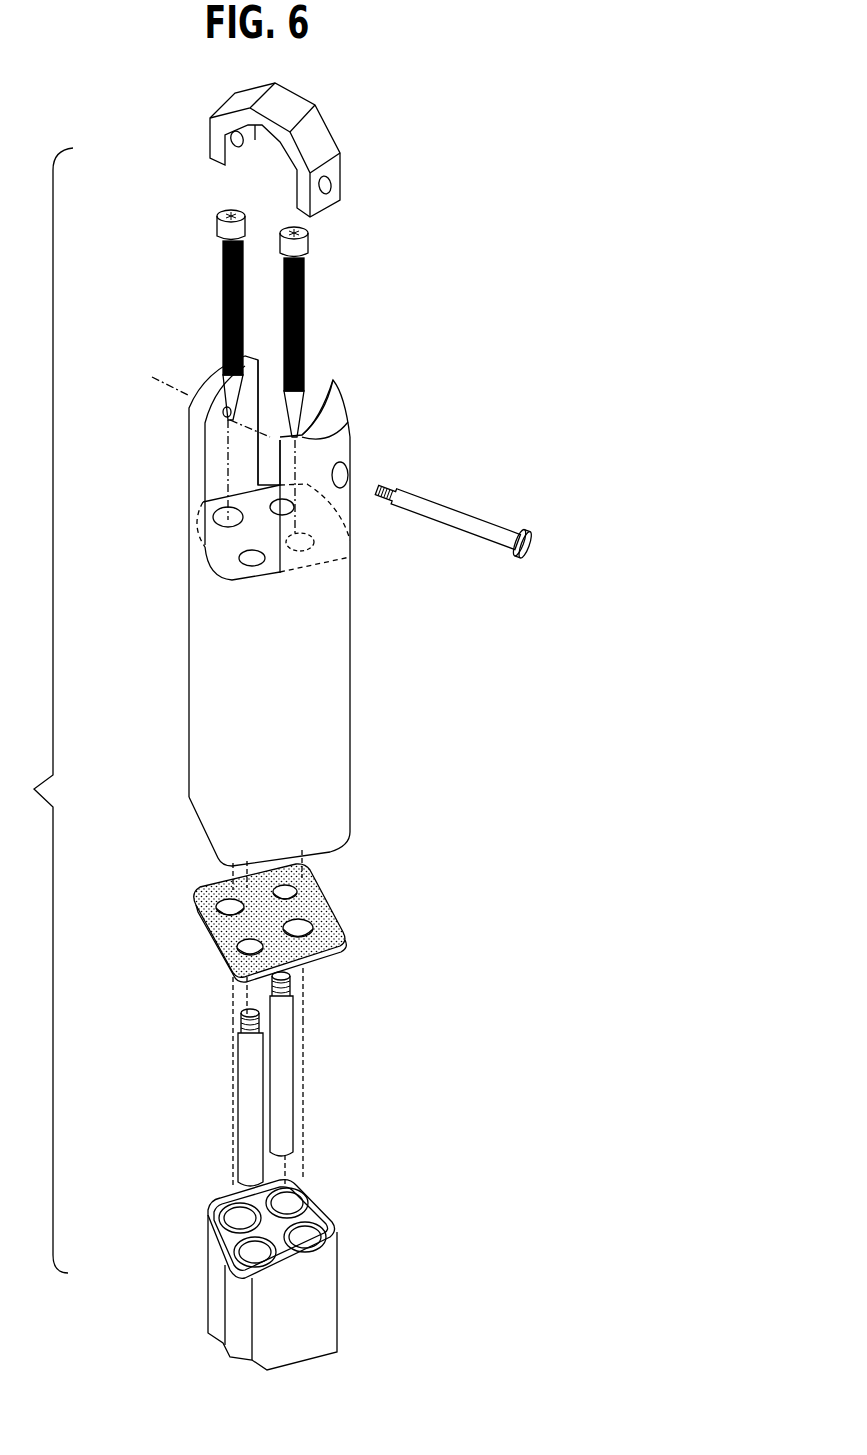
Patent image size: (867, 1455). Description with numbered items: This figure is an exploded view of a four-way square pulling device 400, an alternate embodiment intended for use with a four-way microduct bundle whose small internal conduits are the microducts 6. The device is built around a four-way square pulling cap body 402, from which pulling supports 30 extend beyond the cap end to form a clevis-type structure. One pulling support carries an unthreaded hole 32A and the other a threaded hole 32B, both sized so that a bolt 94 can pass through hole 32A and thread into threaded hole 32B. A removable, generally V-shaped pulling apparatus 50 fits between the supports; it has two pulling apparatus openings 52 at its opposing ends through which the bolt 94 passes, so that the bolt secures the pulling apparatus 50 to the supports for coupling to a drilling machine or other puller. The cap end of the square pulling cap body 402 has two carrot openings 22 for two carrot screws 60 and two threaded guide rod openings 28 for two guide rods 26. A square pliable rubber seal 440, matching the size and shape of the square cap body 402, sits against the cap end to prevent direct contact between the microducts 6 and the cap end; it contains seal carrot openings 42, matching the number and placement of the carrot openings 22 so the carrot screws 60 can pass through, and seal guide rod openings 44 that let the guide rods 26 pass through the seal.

The 4-way square pulling device 400 is at (455, 175).
The pulling apparatus 50 is at (276, 144).
The pulling apparatus openings 52 is at (230, 146).
The carrot screws 60 is at (221, 266).
The 4-way square pulling cap body 402 is at (272, 611).
The pulling support 30 is at (195, 467).
The hole 32A is at (350, 467).
The threaded hole 32B is at (188, 420).
The carrot openings 22 is at (220, 513).
The threaded guide rod openings 28 is at (282, 500).
The bolt 94 is at (447, 513).
The square pliable rubber seal 440 is at (280, 923).
The seal carrot openings 42 is at (212, 885).
The seal guide rod openings 44 is at (298, 893).
The guide rods 26 is at (245, 1070).
The microducts 6 is at (213, 1203).